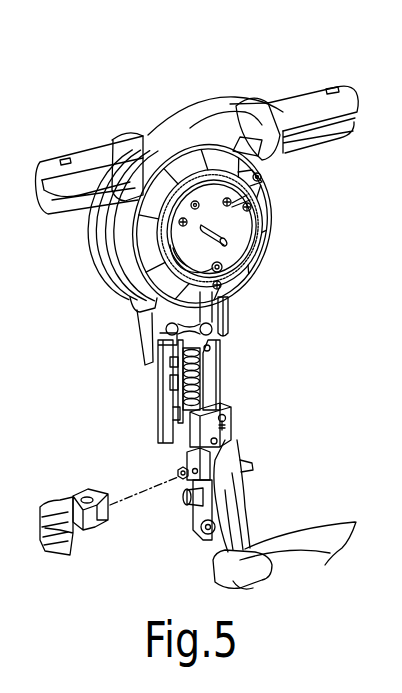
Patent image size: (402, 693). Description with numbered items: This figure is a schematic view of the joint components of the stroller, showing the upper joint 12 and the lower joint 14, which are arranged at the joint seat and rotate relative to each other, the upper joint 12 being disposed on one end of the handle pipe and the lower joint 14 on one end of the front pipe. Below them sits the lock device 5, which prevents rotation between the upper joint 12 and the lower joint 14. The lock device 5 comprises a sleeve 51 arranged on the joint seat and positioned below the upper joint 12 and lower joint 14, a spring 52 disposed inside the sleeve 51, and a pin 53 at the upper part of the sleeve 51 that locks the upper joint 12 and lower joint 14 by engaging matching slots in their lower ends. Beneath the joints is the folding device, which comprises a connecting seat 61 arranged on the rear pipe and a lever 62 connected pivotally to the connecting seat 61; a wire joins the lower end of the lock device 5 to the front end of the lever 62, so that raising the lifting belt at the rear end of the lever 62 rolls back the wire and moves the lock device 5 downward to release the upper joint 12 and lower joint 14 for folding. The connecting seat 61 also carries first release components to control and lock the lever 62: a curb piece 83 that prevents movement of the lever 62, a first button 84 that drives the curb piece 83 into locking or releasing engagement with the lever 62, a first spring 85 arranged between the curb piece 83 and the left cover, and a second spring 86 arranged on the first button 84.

The lock device 5 is at (245, 370).
The upper joint 12 is at (95, 162).
The lower joint 14 is at (295, 105).
The sleeve 51 is at (212, 362).
The spring 52 is at (200, 390).
The pin 53 is at (262, 319).
The connecting seat 61 is at (197, 523).
The lever 62 is at (233, 505).
The curb piece 83 is at (190, 460).
The first button 84 is at (78, 498).
The first spring 85 is at (182, 483).
The second spring 86 is at (232, 438).